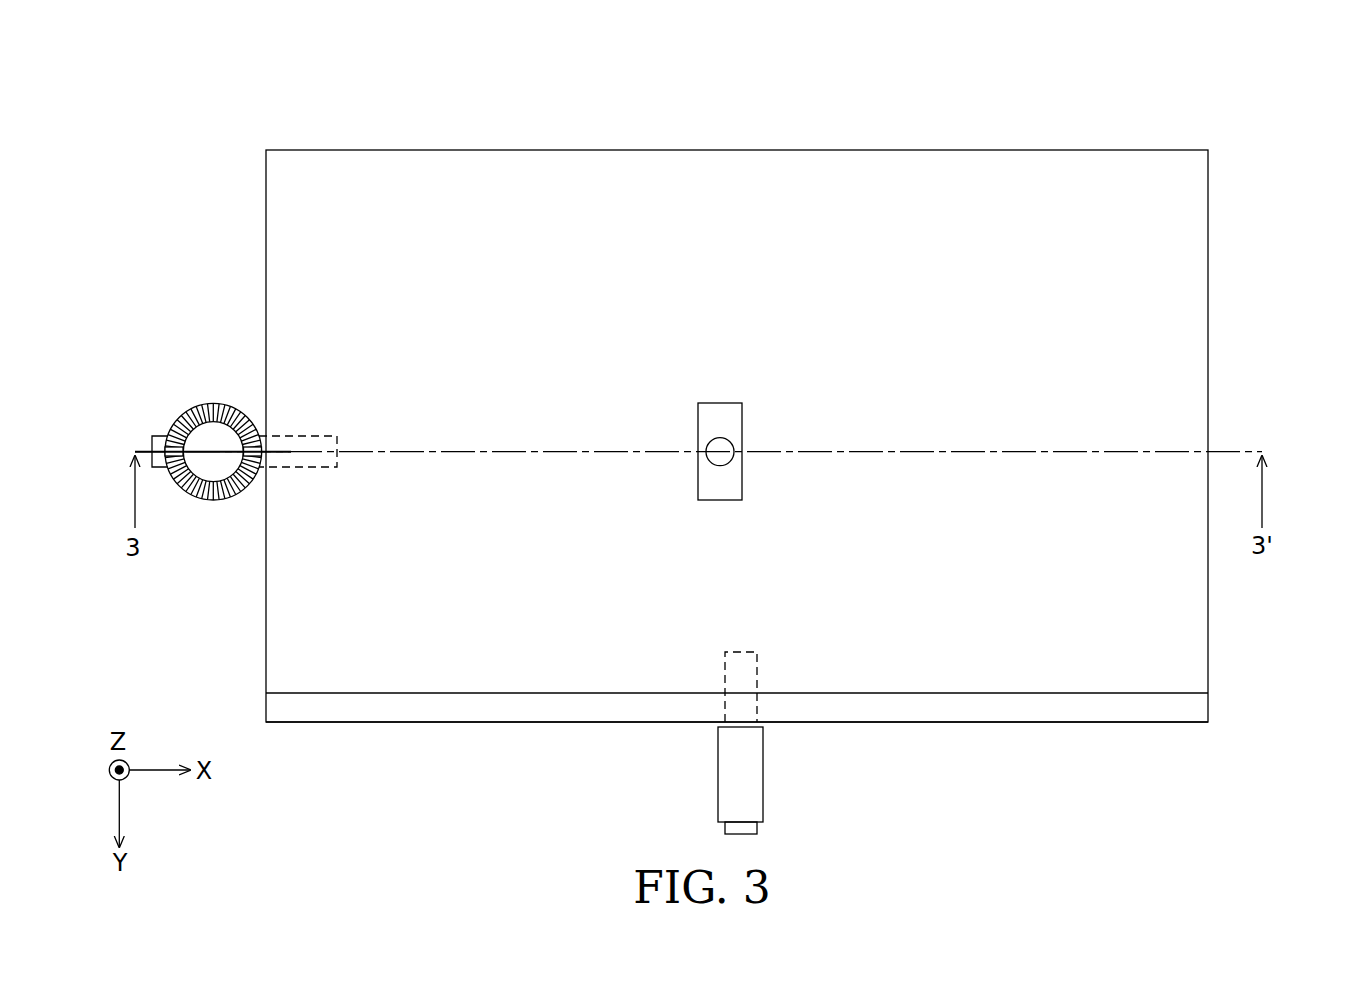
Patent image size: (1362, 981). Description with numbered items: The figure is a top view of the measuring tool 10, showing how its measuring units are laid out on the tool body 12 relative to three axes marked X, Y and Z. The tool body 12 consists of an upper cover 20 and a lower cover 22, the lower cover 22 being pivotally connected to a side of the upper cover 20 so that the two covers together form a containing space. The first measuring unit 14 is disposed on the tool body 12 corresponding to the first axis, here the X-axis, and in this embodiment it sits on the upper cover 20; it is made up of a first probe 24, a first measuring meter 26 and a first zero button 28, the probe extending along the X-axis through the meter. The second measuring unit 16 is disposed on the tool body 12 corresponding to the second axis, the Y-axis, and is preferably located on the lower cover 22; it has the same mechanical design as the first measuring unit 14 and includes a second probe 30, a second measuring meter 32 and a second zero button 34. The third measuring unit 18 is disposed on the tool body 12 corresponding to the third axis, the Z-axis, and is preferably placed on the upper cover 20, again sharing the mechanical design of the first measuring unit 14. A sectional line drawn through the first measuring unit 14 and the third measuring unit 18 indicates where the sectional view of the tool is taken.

The measuring tool 10 is at (1206, 104).
The tool body 12 is at (808, 686).
The first measuring unit 14 is at (222, 390).
The second measuring unit 16 is at (815, 747).
The third measuring unit 18 is at (740, 389).
The upper cover 20 is at (1192, 637).
The lower cover 22 is at (781, 722).
The first probe 24 is at (280, 397).
The first measuring meter 26 is at (213, 403).
The first zero button 28 is at (160, 438).
The second probe 30 is at (750, 672).
The second measuring meter 32 is at (755, 768).
The second zero button 34 is at (791, 823).